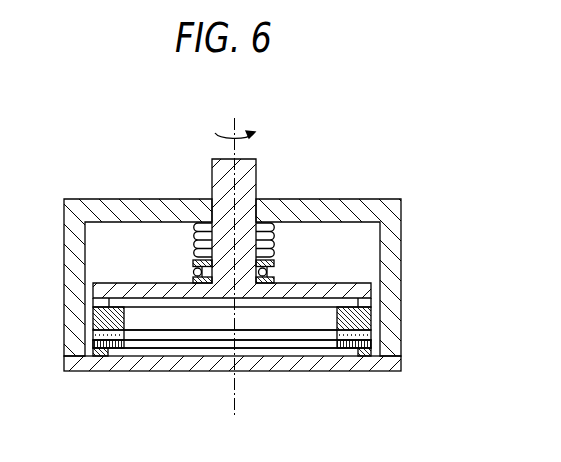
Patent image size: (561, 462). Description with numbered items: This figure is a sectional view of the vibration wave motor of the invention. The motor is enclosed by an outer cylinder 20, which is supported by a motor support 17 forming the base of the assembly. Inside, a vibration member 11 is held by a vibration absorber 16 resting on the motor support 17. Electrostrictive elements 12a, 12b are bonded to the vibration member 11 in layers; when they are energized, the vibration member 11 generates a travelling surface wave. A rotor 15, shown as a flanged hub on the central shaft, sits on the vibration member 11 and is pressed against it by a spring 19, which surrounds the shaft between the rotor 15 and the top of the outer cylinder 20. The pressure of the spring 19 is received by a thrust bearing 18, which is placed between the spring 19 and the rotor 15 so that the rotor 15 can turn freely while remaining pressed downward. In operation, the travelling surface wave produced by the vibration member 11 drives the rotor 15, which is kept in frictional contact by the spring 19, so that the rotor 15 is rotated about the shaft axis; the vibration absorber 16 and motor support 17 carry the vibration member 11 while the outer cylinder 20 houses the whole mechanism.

The outer cylinder 20 is at (402, 213).
The spring 19 is at (277, 233).
The thrust bearing 18 is at (277, 263).
The rotor 15 is at (365, 292).
The vibration member 11 is at (367, 318).
The electrostrictive element 12a is at (370, 337).
The electrostrictive element 12b is at (370, 348).
The motor support 17 is at (298, 360).
The vibration absorber 16 is at (365, 356).